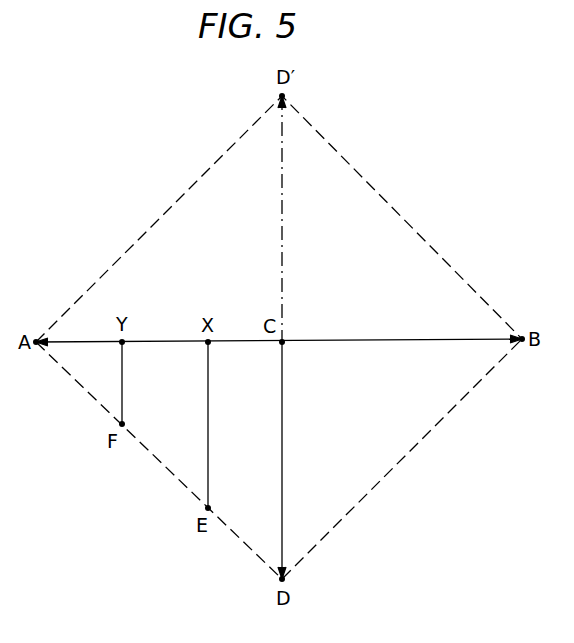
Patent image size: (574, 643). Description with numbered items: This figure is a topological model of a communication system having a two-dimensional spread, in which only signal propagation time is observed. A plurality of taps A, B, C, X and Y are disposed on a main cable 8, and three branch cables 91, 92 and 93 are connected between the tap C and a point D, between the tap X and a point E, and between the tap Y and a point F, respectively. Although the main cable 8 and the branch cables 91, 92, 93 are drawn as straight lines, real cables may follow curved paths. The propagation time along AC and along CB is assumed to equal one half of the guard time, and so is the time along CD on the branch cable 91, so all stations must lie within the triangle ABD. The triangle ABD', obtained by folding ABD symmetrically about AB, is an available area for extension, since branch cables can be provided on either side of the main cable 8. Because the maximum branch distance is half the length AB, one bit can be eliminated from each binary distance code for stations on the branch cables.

The main cable 8 is at (386, 339).
The branch cable 91 is at (283, 430).
The branch cable 92 is at (209, 425).
The branch cable 93 is at (122, 385).